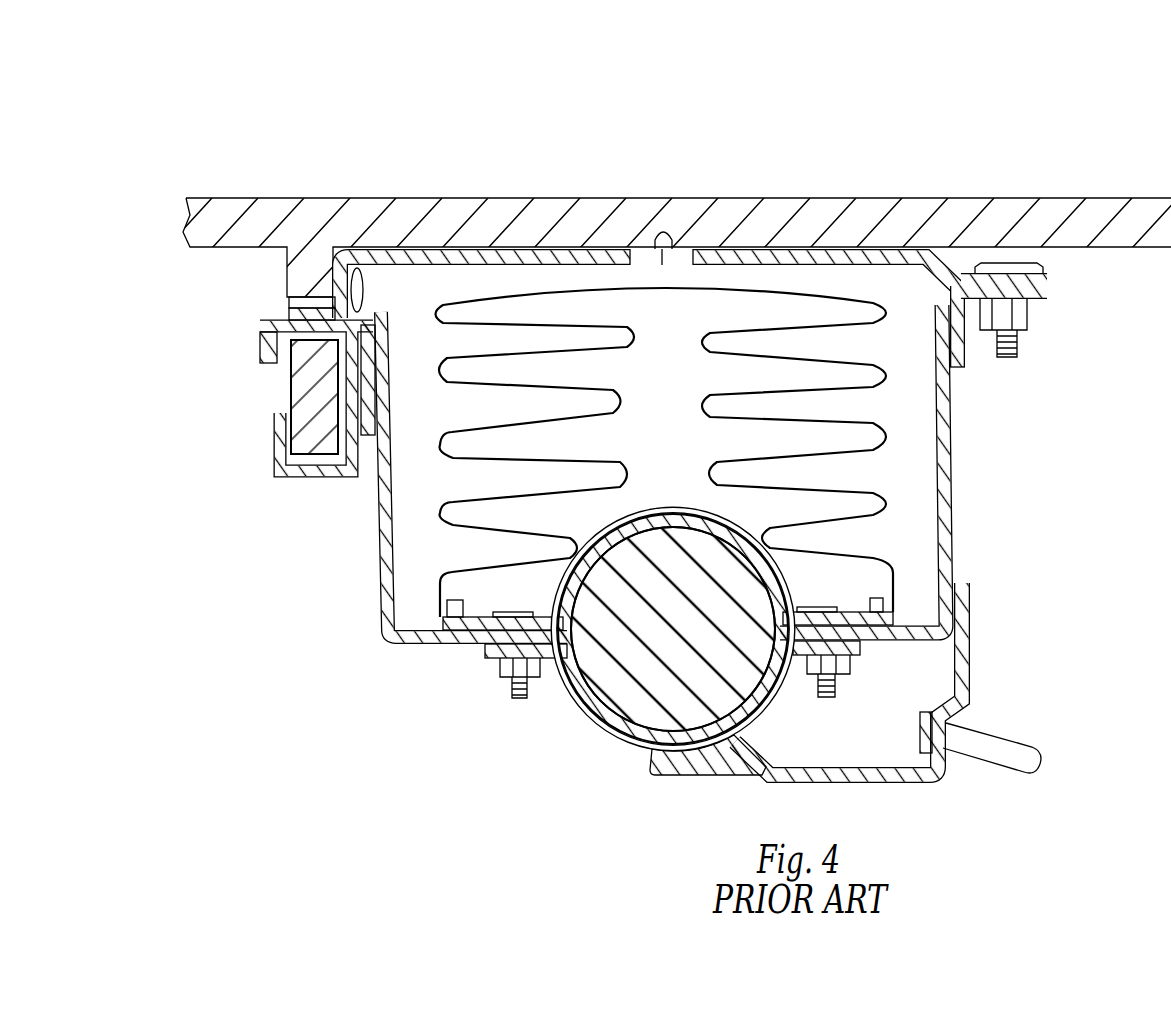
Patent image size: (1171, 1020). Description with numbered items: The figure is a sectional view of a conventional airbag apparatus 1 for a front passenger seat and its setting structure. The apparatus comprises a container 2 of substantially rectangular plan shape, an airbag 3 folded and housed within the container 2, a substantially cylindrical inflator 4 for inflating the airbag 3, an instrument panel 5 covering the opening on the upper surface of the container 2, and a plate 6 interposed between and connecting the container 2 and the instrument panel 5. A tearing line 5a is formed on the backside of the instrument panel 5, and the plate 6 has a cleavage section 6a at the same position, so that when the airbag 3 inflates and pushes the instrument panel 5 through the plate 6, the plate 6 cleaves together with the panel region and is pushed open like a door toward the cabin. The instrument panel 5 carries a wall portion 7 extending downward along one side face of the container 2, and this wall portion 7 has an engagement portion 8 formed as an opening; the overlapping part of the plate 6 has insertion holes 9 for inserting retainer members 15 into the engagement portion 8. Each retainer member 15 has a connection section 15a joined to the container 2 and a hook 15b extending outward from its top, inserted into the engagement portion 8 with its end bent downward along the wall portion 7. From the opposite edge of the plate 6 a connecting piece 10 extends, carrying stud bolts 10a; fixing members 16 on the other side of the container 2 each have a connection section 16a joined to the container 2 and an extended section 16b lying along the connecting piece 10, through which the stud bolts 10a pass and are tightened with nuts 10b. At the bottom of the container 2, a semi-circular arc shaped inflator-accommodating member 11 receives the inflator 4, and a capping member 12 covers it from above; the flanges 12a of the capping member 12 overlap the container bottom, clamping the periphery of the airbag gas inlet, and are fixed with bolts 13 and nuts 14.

The airbag apparatus 1 is at (937, 67).
The container 2 is at (957, 550).
The airbag 3 is at (713, 283).
The inflator 4 is at (633, 717).
The instrument panel 5 is at (237, 210).
The tearing line 5a is at (680, 233).
The plate 6 is at (850, 247).
The cleavage section 6a is at (645, 253).
The wall portion 7 is at (300, 385).
The engagement portion 8 is at (290, 302).
The insertion holes 9 is at (290, 312).
The connecting piece 10 is at (1047, 283).
The stud bolts 10a is at (1012, 355).
The nuts 10b is at (1027, 327).
The inflator-accommodating member 11 is at (587, 713).
The capping member 12 is at (660, 514).
The flanges 12a is at (480, 615).
The bolts 13 is at (520, 700).
The nuts 14 is at (500, 673).
The retainer members 15 is at (370, 303).
The connection section 15a is at (372, 445).
The hook 15b is at (263, 343).
The fixing members 16 is at (972, 360).
The connection section 16a is at (957, 368).
The extended section 16b is at (1040, 300).